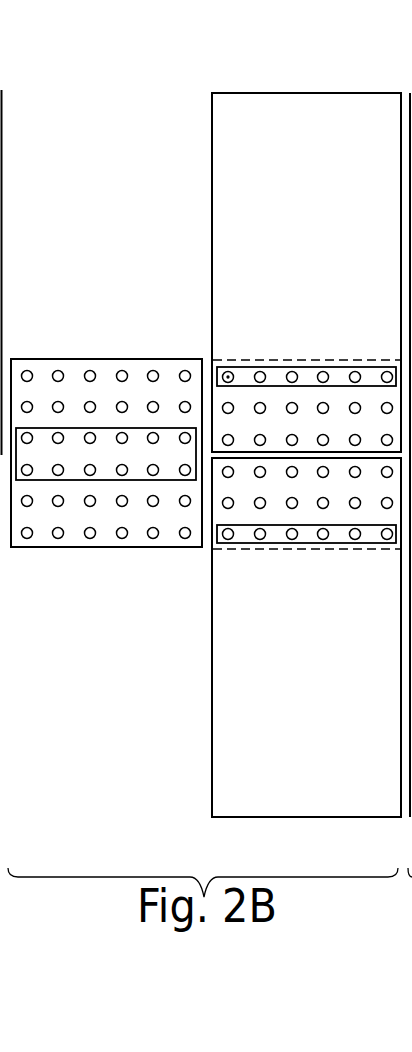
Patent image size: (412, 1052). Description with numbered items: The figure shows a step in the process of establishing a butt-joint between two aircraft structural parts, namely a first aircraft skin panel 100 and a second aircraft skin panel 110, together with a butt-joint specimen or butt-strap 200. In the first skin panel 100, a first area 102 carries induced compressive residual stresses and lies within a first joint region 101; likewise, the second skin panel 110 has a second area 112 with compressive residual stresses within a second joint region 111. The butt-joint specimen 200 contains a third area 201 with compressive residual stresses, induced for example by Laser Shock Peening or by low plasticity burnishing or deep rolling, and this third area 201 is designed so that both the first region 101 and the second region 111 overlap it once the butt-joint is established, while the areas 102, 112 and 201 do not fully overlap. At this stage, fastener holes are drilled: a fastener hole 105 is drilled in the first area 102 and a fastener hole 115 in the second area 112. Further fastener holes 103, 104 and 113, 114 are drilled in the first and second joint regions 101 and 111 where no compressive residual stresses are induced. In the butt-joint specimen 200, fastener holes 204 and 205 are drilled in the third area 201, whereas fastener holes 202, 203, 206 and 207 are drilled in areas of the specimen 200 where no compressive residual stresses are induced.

The first aircraft skin panel 100 is at (304, 803).
The first region 101 is at (310, 507).
The first area 102 is at (339, 535).
The fastener hole 103 is at (228, 472).
The fastener hole 104 is at (228, 503).
The fastener hole 105 is at (228, 534).
The second aircraft skin panel 110 is at (302, 125).
The second region 111 is at (310, 402).
The second area 112 is at (340, 375).
The fastener hole 113 is at (228, 440).
The fastener hole 114 is at (228, 408).
The fastener hole 115 is at (228, 377).
The butt-joint specimen 200 is at (135, 375).
The third area 201 is at (104, 466).
The fastener hole 202 is at (27, 533).
The fastener hole 203 is at (27, 501).
The fastener hole 204 is at (27, 470).
The fastener hole 205 is at (27, 438).
The fastener hole 206 is at (27, 407).
The fastener hole 207 is at (27, 376).